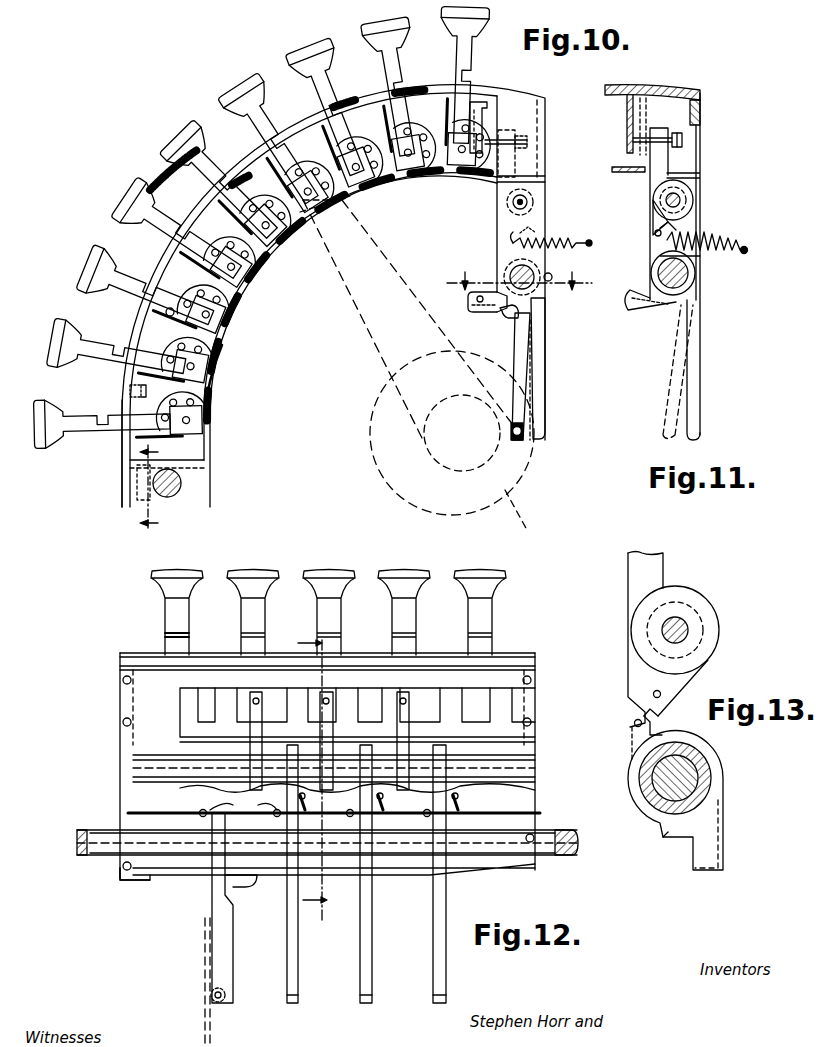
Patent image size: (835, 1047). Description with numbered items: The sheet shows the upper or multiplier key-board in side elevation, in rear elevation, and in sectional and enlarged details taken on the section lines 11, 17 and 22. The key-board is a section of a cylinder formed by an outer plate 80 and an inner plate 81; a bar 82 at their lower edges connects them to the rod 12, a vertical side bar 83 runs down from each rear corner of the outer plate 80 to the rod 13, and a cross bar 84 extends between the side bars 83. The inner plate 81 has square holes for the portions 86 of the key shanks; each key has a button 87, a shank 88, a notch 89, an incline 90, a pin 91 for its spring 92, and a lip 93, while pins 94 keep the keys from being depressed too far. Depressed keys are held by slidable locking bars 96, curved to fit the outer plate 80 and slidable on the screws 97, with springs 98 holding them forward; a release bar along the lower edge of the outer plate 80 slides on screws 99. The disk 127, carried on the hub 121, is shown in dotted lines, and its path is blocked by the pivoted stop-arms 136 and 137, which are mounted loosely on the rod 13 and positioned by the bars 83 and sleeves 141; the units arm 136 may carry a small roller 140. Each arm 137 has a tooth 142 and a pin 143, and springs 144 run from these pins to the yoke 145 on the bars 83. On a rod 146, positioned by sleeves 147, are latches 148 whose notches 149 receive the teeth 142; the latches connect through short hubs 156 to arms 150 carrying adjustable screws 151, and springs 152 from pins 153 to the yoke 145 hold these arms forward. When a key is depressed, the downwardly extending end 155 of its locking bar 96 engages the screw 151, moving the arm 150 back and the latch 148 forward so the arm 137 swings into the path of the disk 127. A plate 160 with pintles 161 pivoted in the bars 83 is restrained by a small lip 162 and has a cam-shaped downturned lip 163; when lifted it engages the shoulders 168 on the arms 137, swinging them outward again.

In FIG. 12, the section line 11— 11 is at (317, 775).
In FIG. 10, the rod 12 is at (170, 497).
In FIG. 10, the rod 13 is at (527, 285).
In FIG. 11, the rod 13 is at (698, 280).
In FIG. 13, the rod 13 is at (683, 778).
In FIG. 12, the rod 13 is at (552, 833).
In FIG. 10, the section line 17— 17 is at (523, 283).
In FIG. 10, the section line 22— 22 is at (158, 490).
In FIG. 10, the outer plate 80 is at (265, 172).
In FIG. 11, the outer plate 80 is at (676, 88).
In FIG. 12, the outer plate 80 is at (507, 653).
In FIG. 10, the inner plate 81 is at (278, 260).
In FIG. 11, the inner plate 81 is at (630, 172).
In FIG. 12, the inner plate 81 is at (158, 745).
In FIG. 10, the bar 82 is at (187, 490).
In FIG. 10, the side bar 83 is at (540, 220).
In FIG. 11, the side bar 83 is at (700, 217).
In FIG. 12, the side bar 83 is at (127, 795).
In FIG. 10, the cross bar 84 is at (506, 153).
In FIG. 11, the cross bar 84 is at (700, 118).
In FIG. 12, the cross bar 84 is at (445, 679).
In FIG. 10, the shank portions 86 is at (227, 347).
In FIG. 10, the button 87 is at (80, 287).
In FIG. 12, the button 87 is at (243, 586).
In FIG. 10, the shank 88 is at (110, 277).
In FIG. 12, the shank 88 is at (243, 618).
In FIG. 10, the notch 89 is at (133, 287).
In FIG. 12, the notch 89 is at (243, 637).
In FIG. 10, the incline 90 is at (128, 350).
In FIG. 10, the pin 91 is at (168, 315).
In FIG. 10, the spring 92 is at (197, 295).
In FIG. 10, the lip 93 is at (243, 313).
In FIG. 10, the pin 94 is at (236, 298).
In FIG. 10, the slidable locking bar 96 is at (146, 391).
In FIG. 10, the screw 97 is at (130, 389).
In FIG. 10, the spring 98 is at (232, 192).
In FIG. 10, the screw 99 is at (122, 478).
In FIG. 10, the hub 121 is at (395, 338).
In FIG. 10, the disk 127 is at (460, 452).
In FIG. 12, the disk 127 is at (205, 932).
In FIG. 10, the stop-arm 136 is at (522, 407).
In FIG. 11, the stop-arm 136 is at (678, 372).
In FIG. 12, the stop-arm 136 is at (225, 958).
In FIG. 10, the stop-arm 137 is at (541, 387).
In FIG. 11, the stop-arm 137 is at (700, 395).
In FIG. 13, the stop-arm 137 is at (707, 863).
In FIG. 12, the stop-arm 137 is at (362, 957).
In FIG. 10, the roller 140 is at (518, 440).
In FIG. 12, the roller 140 is at (217, 1000).
In FIG. 11, the sleeve 141 is at (690, 295).
In FIG. 13, the sleeve 141 is at (660, 812).
In FIG. 12, the sleeve 141 is at (294, 838).
In FIG. 13, the tooth 142 is at (640, 712).
In FIG. 13, the pin 143 is at (638, 727).
In FIG. 11, the spring 144 is at (700, 257).
In FIG. 12, the spring 144 is at (243, 803).
In FIG. 10, the yoke 145 is at (590, 246).
In FIG. 11, the yoke 145 is at (745, 249).
In FIG. 12, the yoke 145 is at (170, 813).
In FIG. 10, the rod 146 is at (520, 202).
In FIG. 11, the rod 146 is at (681, 200).
In FIG. 13, the rod 146 is at (690, 630).
In FIG. 12, the rod 146 is at (125, 767).
In FIG. 12, the sleeve 147 is at (203, 765).
In FIG. 11, the latch 148 is at (690, 185).
In FIG. 13, the latch 148 is at (638, 668).
In FIG. 12, the latch 148 is at (297, 795).
In FIG. 13, the notch 149 is at (662, 705).
In FIG. 11, the arm 150 is at (660, 158).
In FIG. 13, the arm 150 is at (638, 567).
In FIG. 12, the arm 150 is at (262, 720).
In FIG. 10, the adjustable screw 151 is at (488, 160).
In FIG. 11, the adjustable screw 151 is at (680, 138).
In FIG. 12, the adjustable screw 151 is at (397, 711).
In FIG. 10, the spring 152 is at (560, 238).
In FIG. 11, the spring 152 is at (704, 242).
In FIG. 12, the spring 152 is at (307, 818).
In FIG. 11, the pin 153 is at (656, 237).
In FIG. 13, the pin 153 is at (653, 694).
In FIG. 10, the downwardly extending end 155 is at (478, 123).
In FIG. 11, the downwardly extending end 155 is at (633, 137).
In FIG. 12, the downwardly extending end 155 is at (470, 711).
In FIG. 12, the short hub 156 is at (345, 772).
In FIG. 10, the plate 160 is at (515, 314).
In FIG. 11, the plate 160 is at (668, 315).
In FIG. 12, the plate 160 is at (395, 873).
In FIG. 10, the pintle 161 is at (473, 312).
In FIG. 12, the lip 162 is at (140, 880).
In FIG. 10, the downturned lip 163 is at (502, 312).
In FIG. 12, the downturned lip 163 is at (238, 882).
In FIG. 13, the shoulder 168 is at (670, 840).